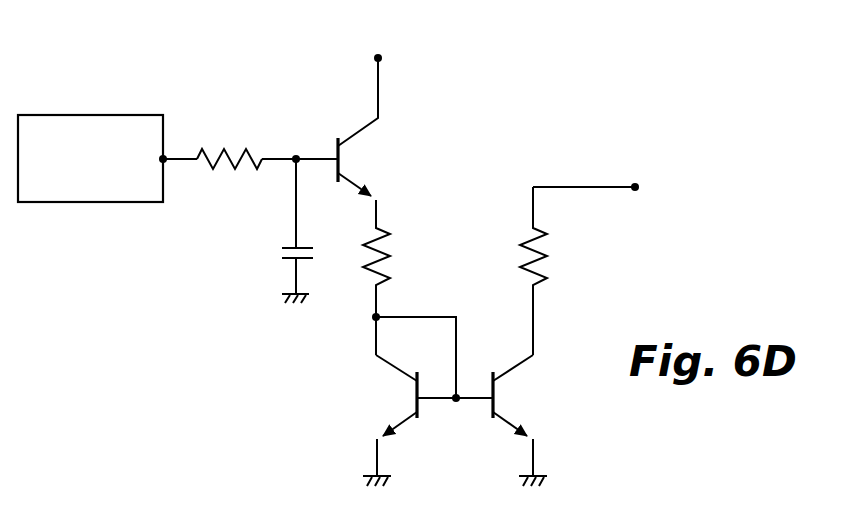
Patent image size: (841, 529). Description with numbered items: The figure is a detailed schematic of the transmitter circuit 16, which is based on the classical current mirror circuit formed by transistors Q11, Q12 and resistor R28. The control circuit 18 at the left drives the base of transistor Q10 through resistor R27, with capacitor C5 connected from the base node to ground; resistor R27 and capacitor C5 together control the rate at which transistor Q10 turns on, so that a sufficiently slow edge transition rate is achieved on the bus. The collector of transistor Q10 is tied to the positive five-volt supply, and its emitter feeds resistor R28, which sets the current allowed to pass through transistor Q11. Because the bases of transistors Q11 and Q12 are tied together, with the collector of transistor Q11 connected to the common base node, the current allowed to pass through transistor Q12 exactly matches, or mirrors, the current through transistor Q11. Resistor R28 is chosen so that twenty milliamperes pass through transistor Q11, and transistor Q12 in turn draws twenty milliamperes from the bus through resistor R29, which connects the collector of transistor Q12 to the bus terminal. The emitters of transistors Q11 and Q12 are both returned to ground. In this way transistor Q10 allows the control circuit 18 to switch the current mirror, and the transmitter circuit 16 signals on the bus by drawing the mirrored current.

The transmitter circuit 16 is at (488, 126).
The control circuit 18 is at (86, 203).
The resistor R27 is at (229, 140).
The resistor R28 is at (399, 255).
The resistor R29 is at (561, 271).
The capacitor C5 is at (276, 231).
The transistor Q10 is at (368, 140).
The transistor Q11 is at (422, 420).
The transistor Q12 is at (525, 420).